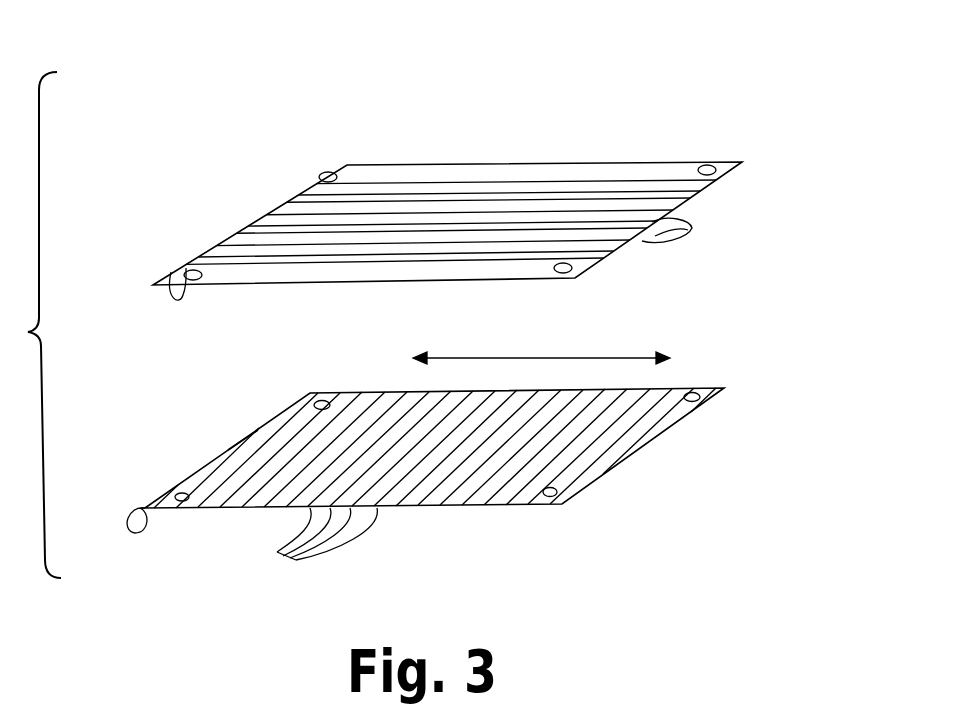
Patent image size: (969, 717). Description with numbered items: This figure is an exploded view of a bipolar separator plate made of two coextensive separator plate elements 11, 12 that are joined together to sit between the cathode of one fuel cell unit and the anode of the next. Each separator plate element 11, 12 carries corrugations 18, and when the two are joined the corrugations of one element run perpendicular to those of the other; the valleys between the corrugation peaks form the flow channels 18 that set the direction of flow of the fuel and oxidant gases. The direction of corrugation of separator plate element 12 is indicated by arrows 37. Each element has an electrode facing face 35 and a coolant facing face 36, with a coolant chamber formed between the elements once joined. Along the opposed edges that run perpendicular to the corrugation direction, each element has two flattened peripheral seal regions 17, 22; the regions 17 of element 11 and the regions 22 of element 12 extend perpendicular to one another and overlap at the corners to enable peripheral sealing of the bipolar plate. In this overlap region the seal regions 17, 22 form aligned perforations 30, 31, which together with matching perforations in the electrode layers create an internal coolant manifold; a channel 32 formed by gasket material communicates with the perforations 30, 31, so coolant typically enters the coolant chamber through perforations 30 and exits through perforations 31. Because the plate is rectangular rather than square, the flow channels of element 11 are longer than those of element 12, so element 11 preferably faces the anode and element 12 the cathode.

The separator plate element 11 is at (505, 165).
The separator plate element 12 is at (724, 388).
The flattened peripheral seal region 17 is at (618, 168).
The corrugations 18 is at (690, 229).
The flattened peripheral seal region 22 is at (640, 445).
The aligned perforations 30 is at (340, 165).
The aligned perforations 31 is at (330, 400).
The channel 32 is at (223, 473).
The electrode facing face 35 is at (272, 202).
The coolant facing face 36 is at (178, 267).
The arrows 37 is at (553, 357).